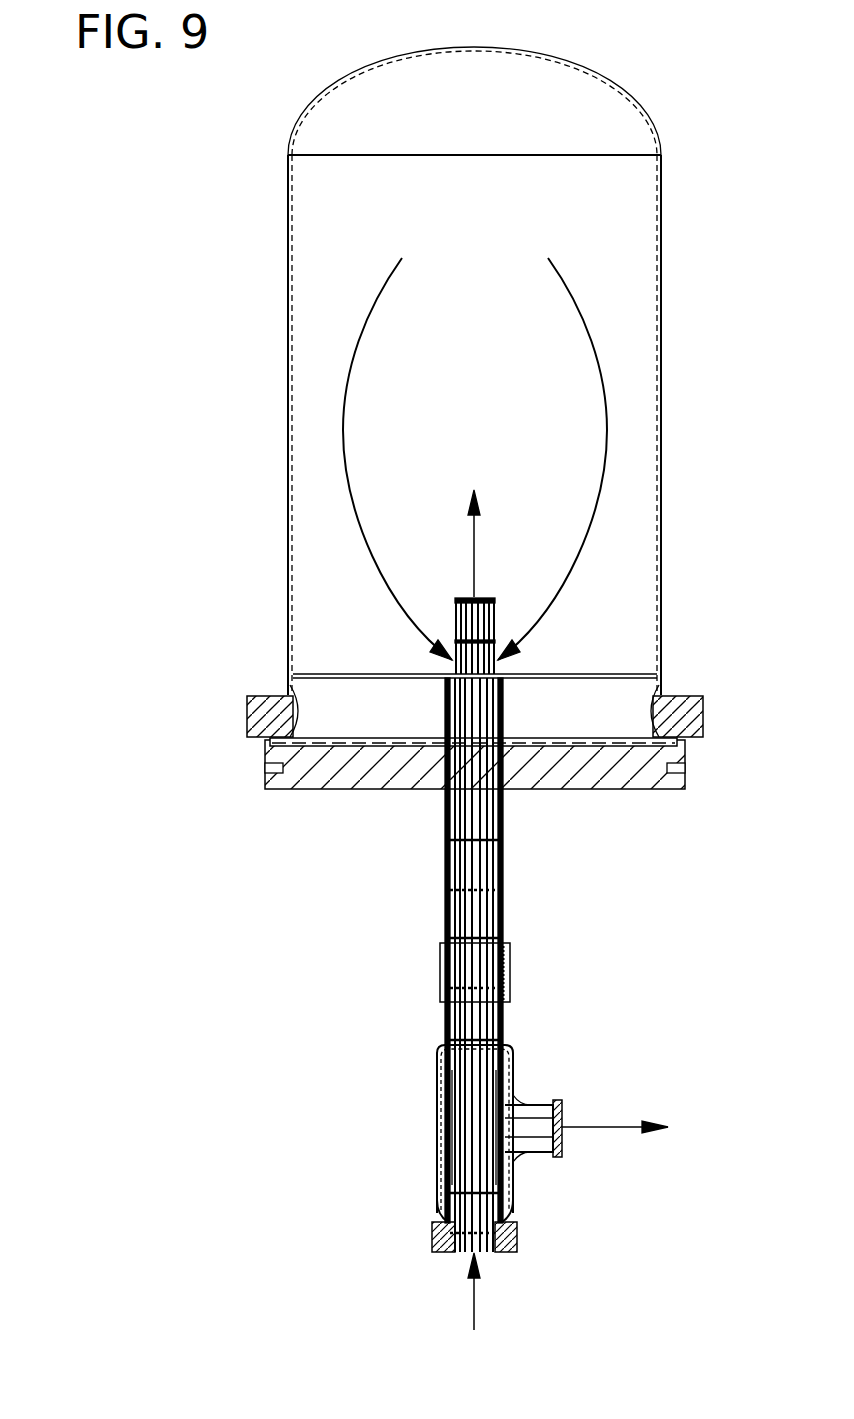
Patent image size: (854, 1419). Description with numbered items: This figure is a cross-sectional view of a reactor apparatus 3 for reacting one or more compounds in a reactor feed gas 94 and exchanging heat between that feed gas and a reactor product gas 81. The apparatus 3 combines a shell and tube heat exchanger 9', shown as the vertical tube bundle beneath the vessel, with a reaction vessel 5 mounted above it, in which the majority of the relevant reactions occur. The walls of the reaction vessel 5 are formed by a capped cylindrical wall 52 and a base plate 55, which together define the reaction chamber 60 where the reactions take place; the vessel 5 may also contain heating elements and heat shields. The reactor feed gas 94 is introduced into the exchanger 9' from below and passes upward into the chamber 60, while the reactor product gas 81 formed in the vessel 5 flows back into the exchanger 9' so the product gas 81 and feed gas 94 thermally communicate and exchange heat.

The reactor apparatus 3 is at (452, 392).
The reaction vessel 5 is at (662, 395).
The capped cylindrical wall 52 is at (292, 437).
The base plate 55 is at (327, 789).
The reaction chamber 60 is at (628, 292).
The reactor product gas 81 is at (597, 357).
The shell and tube heat exchanger 9' is at (500, 925).
The reactor feed gas 94 is at (474, 545).